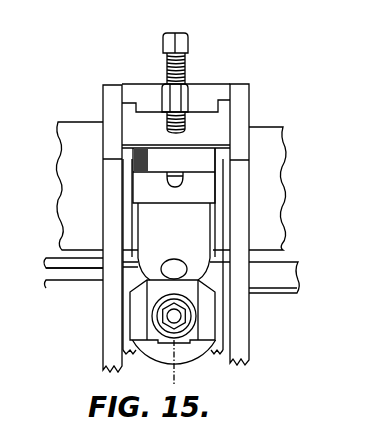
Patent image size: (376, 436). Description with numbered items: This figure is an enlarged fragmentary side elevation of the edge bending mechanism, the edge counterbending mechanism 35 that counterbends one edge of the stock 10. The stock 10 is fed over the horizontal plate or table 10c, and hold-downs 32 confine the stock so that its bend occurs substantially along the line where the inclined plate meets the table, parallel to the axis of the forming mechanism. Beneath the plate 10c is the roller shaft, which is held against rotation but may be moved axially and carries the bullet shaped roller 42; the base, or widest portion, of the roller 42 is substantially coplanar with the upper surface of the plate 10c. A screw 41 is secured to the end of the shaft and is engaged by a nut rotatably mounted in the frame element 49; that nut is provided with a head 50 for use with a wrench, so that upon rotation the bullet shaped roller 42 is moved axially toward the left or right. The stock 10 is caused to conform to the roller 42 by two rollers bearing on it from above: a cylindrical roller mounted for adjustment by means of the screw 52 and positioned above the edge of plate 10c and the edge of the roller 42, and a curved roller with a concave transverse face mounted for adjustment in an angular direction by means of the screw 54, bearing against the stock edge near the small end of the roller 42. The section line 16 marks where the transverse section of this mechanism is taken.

The stock 10 is at (50, 258).
The horizontal plate or table 10c is at (47, 282).
The section line 16- 16 is at (172, 22).
The hold-downs 32 is at (85, 122).
The edge counterbending mechanism 35 is at (231, 86).
The screw 41 is at (183, 316).
The bullet shaped roller 42 is at (143, 350).
The frame element 49 is at (138, 310).
The head 50 is at (190, 327).
The screw 52 is at (190, 40).
The screw 54 is at (190, 90).